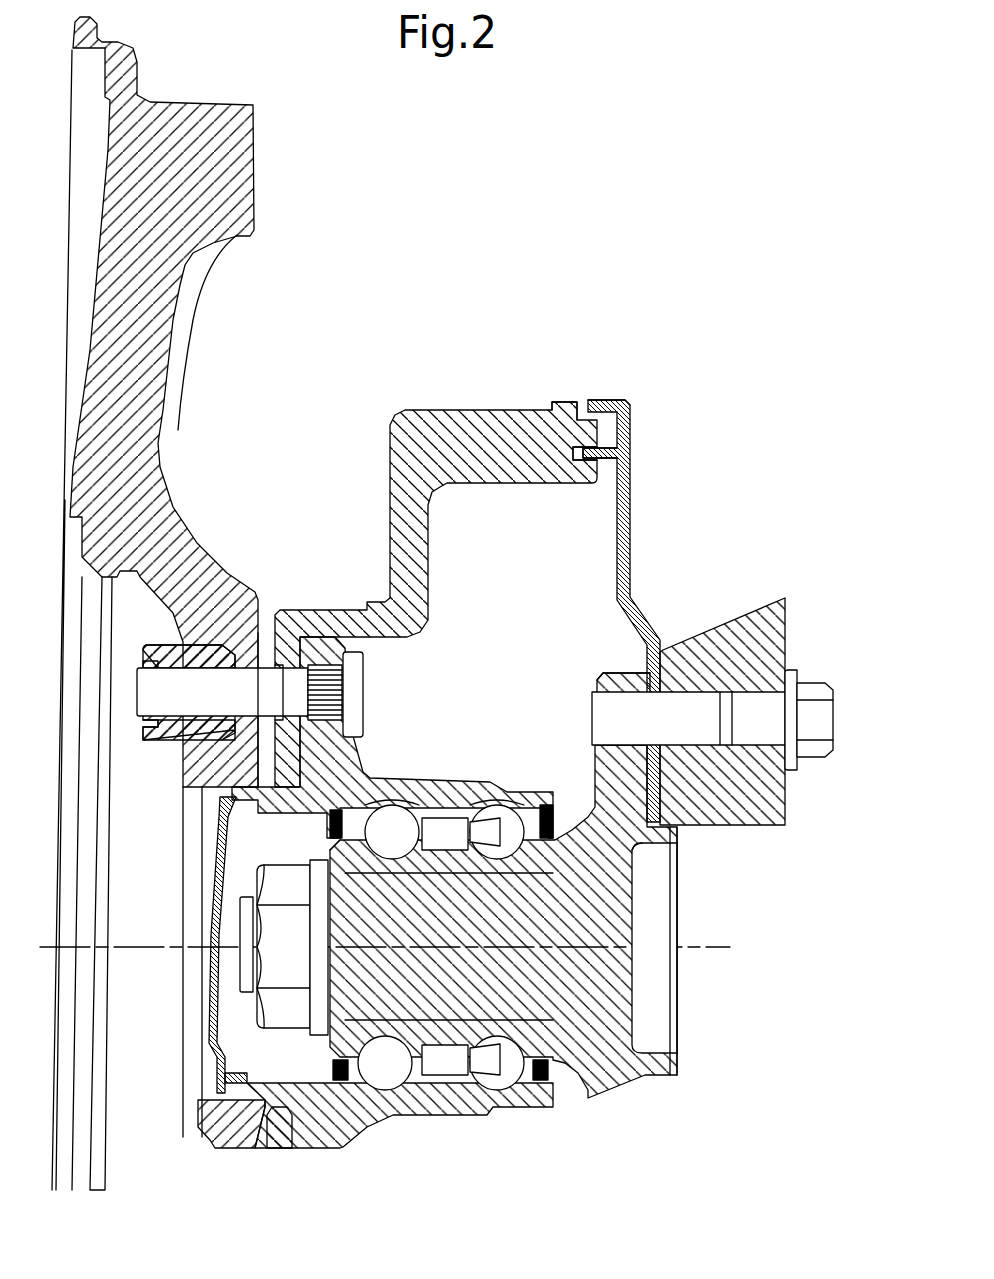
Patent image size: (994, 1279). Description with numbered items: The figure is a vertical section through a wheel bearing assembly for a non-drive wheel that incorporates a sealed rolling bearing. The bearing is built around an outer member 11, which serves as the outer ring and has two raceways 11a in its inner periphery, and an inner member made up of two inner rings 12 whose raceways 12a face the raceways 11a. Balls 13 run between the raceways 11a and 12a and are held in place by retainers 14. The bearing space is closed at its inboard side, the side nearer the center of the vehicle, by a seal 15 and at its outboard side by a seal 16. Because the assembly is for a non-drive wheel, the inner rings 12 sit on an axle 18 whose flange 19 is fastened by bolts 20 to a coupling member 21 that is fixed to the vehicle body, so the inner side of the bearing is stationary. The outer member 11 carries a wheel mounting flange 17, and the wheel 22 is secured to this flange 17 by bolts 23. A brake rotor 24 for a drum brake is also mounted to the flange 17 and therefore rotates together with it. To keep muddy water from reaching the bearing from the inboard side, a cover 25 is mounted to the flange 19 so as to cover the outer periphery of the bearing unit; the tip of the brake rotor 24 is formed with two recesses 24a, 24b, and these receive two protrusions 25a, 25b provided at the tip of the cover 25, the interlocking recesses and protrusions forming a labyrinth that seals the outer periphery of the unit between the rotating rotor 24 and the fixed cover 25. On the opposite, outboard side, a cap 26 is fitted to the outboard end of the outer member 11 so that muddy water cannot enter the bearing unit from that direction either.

The outer member 11 is at (363, 782).
The raceways 11a is at (510, 800).
The inner rings 12 is at (550, 932).
The raceways 12a is at (330, 835).
The balls 13 is at (383, 1078).
The retainers 14 is at (487, 1062).
The seal 15 is at (558, 818).
The seal 16 is at (332, 822).
The wheel mounting flange 17 is at (302, 640).
The axle 18 is at (583, 1010).
The flange 19 is at (617, 680).
The bolts 20 is at (813, 712).
The coupling member 21 is at (742, 630).
The wheel 22 is at (170, 452).
The bolts 23 is at (352, 707).
The brake rotor 24 is at (457, 412).
The recess 24a is at (590, 460).
The recess 24b is at (578, 402).
The cover 25 is at (633, 512).
The protrusion 25a is at (610, 463).
The protrusion 25b is at (603, 400).
The cap 26 is at (217, 1020).